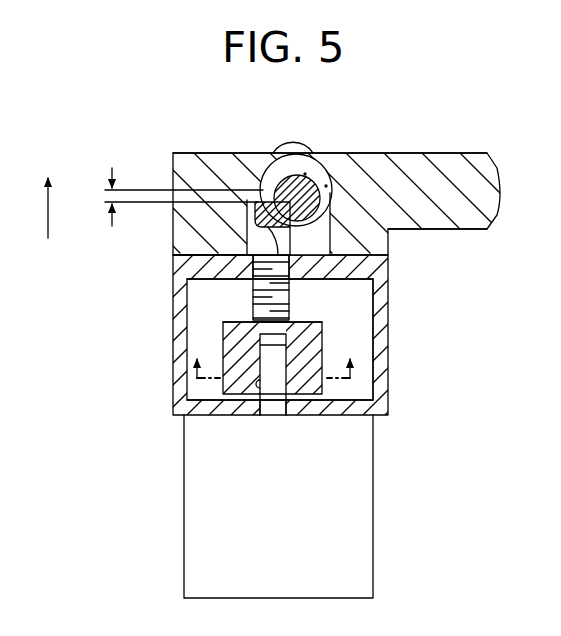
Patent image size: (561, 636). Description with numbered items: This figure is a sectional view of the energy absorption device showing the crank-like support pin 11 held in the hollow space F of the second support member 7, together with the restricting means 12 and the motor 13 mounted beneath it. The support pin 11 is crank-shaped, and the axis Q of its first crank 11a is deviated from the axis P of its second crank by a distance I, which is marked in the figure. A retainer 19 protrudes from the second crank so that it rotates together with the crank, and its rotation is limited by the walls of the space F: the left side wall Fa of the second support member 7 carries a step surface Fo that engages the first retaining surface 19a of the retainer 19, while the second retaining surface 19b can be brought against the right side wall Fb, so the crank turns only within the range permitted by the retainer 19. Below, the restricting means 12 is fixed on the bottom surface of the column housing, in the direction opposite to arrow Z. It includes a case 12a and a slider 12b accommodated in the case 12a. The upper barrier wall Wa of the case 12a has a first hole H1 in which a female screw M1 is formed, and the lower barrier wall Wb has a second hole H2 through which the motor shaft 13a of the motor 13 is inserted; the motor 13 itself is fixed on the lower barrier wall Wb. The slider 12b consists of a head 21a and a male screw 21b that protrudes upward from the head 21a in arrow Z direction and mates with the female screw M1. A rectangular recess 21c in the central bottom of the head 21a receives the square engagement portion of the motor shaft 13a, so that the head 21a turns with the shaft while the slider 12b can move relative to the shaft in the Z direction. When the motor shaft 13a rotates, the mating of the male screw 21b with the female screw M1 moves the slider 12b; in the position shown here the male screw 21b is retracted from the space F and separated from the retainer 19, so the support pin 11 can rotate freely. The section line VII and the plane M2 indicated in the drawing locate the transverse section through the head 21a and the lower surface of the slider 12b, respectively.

The second support member 7 is at (473, 163).
The crank-like support pin 11 is at (291, 151).
The first crank 11a is at (396, 153).
The restricting means 12 is at (388, 373).
The case 12a is at (388, 338).
The slider 12b is at (213, 359).
The motor 13 is at (362, 473).
The motor shaft 13a is at (270, 415).
The retainer 19 is at (190, 210).
The first retaining surface 19a is at (268, 172).
The second retaining surface 19b is at (290, 290).
The head 21a is at (223, 324).
The male screw 21b is at (253, 296).
The rectangular recess 21c is at (262, 385).
The first hole H1 is at (250, 266).
The second hole H2 is at (280, 415).
The female screw M1 is at (235, 254).
The lower plane M2 is at (385, 322).
The upper barrier wall Wa is at (373, 268).
The lower barrier wall Wb is at (373, 425).
The left side wall Fa is at (178, 178).
The right side wall Fb is at (388, 235).
The step surface Fo is at (246, 170).
The hollow space F is at (396, 134).
The axis of the second crank P is at (305, 172).
The axis of the first crank Q is at (326, 186).
The distance I is at (101, 197).
The arrow Z direction Z is at (48, 193).
The section line VII is at (278, 355).